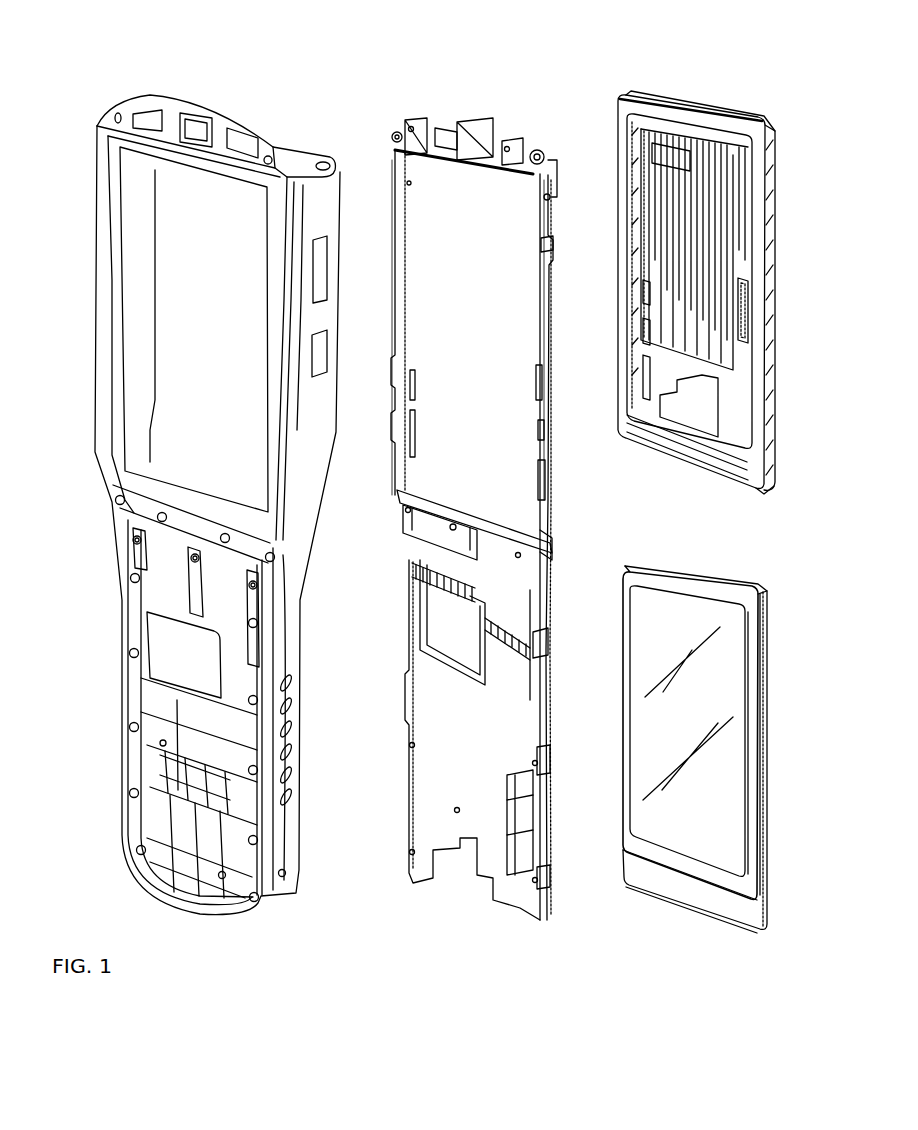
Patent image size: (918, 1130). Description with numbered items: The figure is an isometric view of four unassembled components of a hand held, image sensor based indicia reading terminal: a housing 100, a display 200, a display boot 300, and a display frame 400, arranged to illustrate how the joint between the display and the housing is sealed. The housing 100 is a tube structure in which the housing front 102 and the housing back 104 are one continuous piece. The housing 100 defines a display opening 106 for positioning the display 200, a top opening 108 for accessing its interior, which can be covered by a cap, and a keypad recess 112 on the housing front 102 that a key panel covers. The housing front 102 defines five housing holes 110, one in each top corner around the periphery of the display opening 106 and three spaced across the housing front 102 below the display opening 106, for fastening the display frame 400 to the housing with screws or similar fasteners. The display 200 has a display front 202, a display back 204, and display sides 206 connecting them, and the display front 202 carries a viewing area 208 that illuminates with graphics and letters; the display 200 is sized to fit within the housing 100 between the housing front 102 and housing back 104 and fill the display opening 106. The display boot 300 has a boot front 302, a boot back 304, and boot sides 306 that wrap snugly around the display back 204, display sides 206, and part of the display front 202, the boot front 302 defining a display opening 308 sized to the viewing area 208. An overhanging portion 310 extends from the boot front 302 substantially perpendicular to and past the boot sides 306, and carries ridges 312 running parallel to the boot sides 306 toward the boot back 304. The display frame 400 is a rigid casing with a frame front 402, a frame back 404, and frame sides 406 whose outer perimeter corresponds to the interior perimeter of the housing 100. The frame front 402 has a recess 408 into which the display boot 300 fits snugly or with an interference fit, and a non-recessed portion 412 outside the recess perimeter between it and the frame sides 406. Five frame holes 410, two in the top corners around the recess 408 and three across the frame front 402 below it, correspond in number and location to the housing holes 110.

The housing 100 is at (252, 57).
The housing front 102 is at (273, 262).
The housing back 104 is at (306, 671).
The display opening 106 is at (188, 266).
The top opening 108 is at (300, 160).
The housing hole 110 is at (115, 116).
The keypad recess 112 is at (142, 698).
The display 200 is at (653, 903).
The display front 202 is at (752, 775).
The display back 204 is at (772, 625).
The display sides 206 is at (768, 832).
The viewing area 208 is at (735, 742).
The display boot 300 is at (695, 72).
The boot front 302 is at (752, 388).
The boot back 304 is at (780, 218).
The boot sides 306 is at (772, 437).
The display opening 308 is at (713, 170).
The overhanging portion 310 is at (758, 350).
The ridges 312 is at (768, 295).
The display frame 400 is at (494, 106).
The frame front 402 is at (520, 620).
The frame back 404 is at (552, 348).
The frame sides 406 is at (545, 462).
The recess 408 is at (425, 470).
The frame hole 410 is at (397, 132).
The non-recessed portion 412 is at (394, 345).